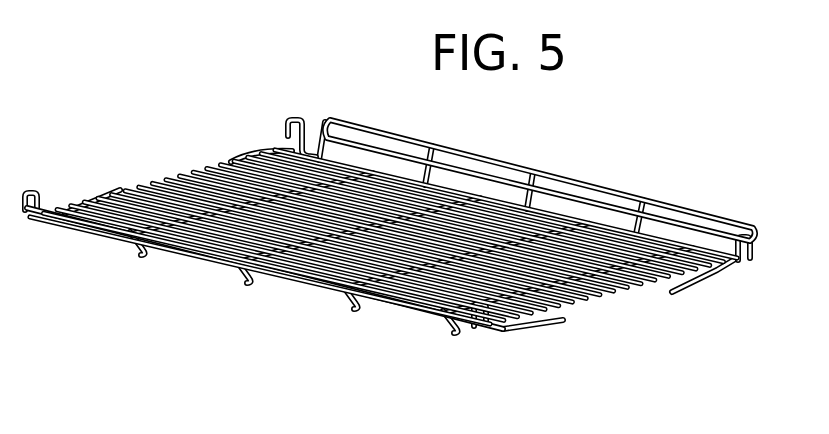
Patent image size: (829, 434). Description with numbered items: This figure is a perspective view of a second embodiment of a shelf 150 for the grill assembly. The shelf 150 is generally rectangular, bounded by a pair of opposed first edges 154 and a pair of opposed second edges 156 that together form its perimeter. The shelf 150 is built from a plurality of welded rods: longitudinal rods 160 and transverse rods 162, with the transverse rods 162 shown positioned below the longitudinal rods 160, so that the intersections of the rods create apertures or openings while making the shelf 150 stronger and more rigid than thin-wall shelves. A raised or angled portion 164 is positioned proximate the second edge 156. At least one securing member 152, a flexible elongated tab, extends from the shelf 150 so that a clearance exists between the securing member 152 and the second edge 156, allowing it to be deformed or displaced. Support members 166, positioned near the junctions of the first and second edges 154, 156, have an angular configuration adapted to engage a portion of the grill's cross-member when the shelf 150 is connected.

The shelf 150 is at (396, 229).
The securing member 152 is at (243, 157).
The first edges 154 is at (586, 300).
The second edges 156 is at (280, 268).
The longitudinal rods 160 is at (330, 117).
The transverse rods 162 is at (433, 147).
The raised or angled portion 164 is at (58, 225).
The support member 166 is at (34, 193).